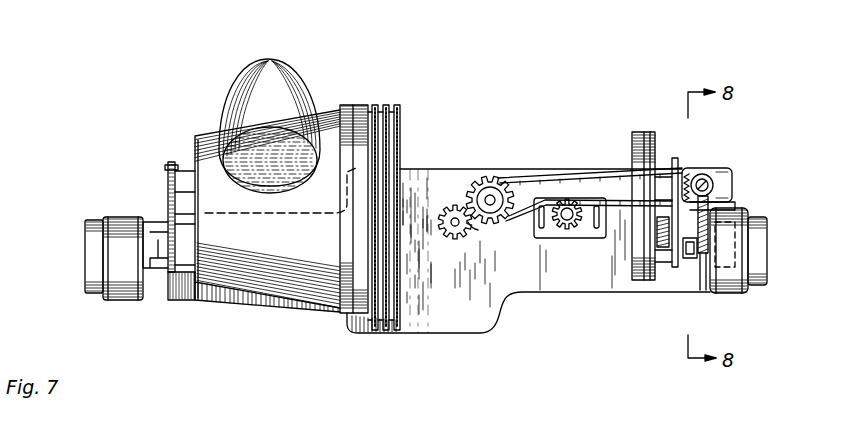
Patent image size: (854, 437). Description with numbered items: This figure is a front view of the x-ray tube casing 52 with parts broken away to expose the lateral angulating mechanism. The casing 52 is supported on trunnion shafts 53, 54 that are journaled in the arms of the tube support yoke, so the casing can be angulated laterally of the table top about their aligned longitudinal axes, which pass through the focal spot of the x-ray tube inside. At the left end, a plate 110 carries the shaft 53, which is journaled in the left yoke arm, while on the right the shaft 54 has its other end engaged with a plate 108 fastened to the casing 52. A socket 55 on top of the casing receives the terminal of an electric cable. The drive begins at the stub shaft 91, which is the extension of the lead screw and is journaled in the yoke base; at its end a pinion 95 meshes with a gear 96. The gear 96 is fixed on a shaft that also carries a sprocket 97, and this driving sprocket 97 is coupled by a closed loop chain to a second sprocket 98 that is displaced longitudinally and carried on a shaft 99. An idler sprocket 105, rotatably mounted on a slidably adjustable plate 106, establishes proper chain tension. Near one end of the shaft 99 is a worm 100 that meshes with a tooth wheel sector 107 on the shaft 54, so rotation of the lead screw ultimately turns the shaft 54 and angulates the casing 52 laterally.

The x-ray tube casing 52 is at (386, 54).
The trunnion shaft 53 is at (160, 270).
The trunnion shaft 54 is at (690, 260).
The socket 55 is at (262, 88).
The stub shaft 91 is at (457, 233).
The pinion 95 is at (472, 228).
The gear 96 is at (486, 181).
The sprocket 97 is at (515, 184).
The sprocket 98 is at (700, 170).
The shaft 99 is at (718, 188).
The worm 100 is at (712, 178).
The idler sprocket 105 is at (561, 231).
The slidably adjustable plate 106 is at (591, 239).
The tooth wheel sector 107 is at (715, 206).
The plate 108 is at (664, 271).
The plate 110 is at (170, 178).